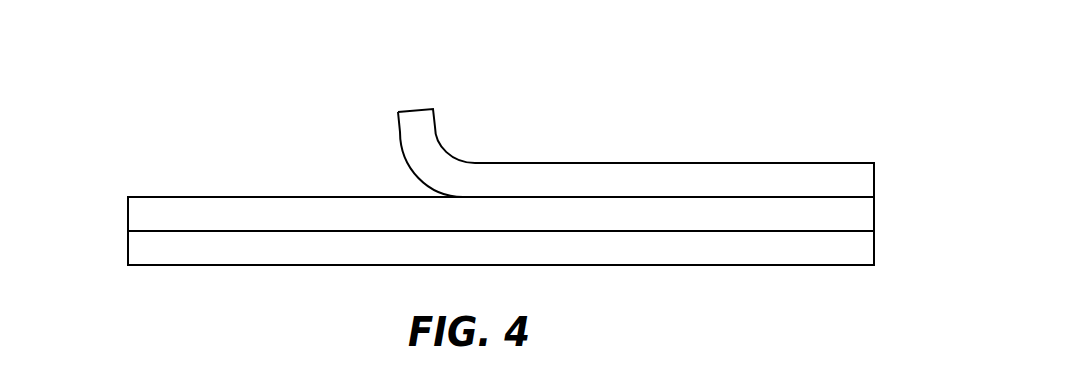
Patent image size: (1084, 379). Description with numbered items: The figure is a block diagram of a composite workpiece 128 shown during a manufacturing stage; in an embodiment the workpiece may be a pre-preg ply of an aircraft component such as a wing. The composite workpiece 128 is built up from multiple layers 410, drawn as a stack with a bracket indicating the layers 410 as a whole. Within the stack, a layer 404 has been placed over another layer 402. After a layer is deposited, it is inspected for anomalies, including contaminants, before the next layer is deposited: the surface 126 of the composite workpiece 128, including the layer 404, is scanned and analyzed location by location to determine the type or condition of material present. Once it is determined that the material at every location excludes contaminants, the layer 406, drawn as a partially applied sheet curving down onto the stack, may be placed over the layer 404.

The composite workpiece 128 is at (183, 103).
The surface 126 is at (148, 182).
The layer 402 is at (128, 247).
The layer 404 is at (128, 212).
The layer 406 is at (400, 131).
The layers 410 is at (882, 163).